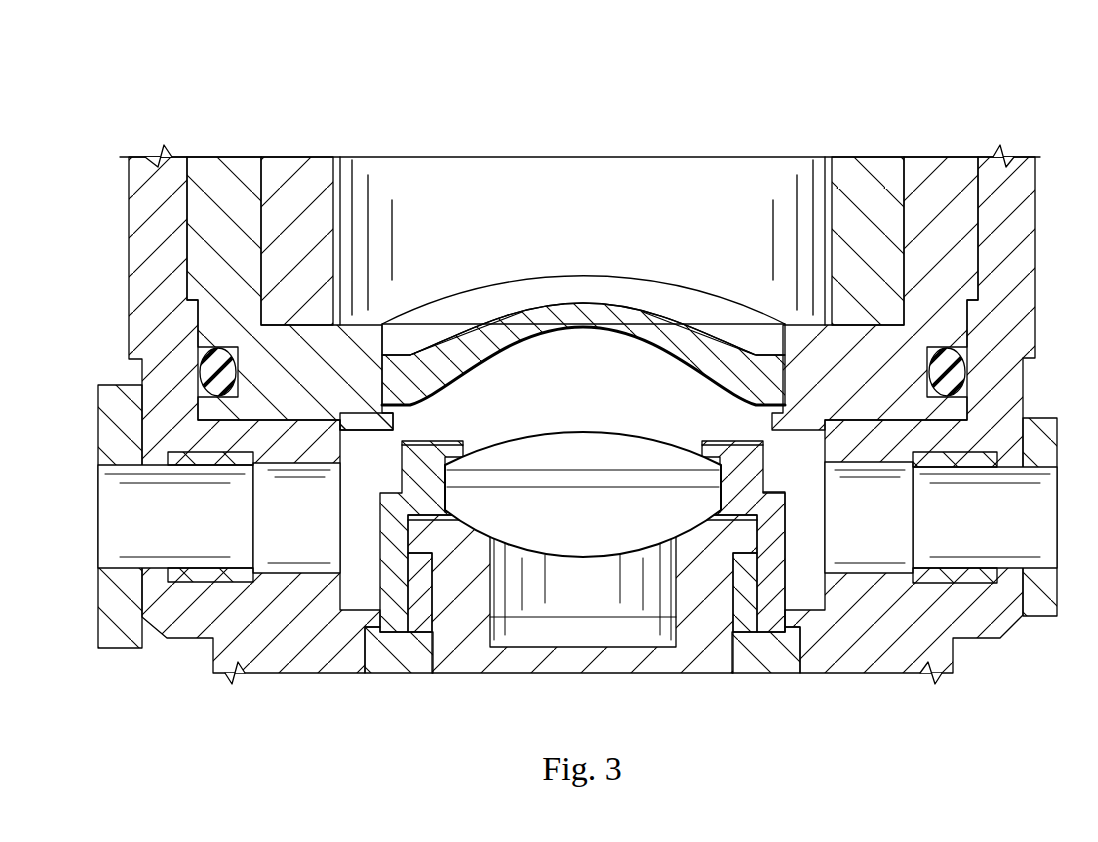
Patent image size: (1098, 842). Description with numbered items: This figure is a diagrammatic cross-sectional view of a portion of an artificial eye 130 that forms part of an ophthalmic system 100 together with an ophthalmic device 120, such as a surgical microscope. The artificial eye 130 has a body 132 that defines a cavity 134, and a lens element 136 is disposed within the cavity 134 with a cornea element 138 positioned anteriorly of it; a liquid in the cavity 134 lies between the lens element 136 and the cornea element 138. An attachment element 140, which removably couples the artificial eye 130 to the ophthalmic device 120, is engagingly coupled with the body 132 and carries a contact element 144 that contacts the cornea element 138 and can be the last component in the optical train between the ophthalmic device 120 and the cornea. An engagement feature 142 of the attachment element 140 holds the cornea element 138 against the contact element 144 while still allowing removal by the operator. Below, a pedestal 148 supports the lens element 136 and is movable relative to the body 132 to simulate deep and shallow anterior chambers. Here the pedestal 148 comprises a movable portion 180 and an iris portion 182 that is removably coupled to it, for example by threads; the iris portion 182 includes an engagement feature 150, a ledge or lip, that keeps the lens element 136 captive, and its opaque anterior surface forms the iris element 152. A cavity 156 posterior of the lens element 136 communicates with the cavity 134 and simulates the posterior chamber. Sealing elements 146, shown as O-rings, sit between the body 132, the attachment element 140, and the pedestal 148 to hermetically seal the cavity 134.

The ophthalmic system 100 is at (730, 130).
The ophthalmic device 120 is at (433, 163).
The artificial eye 130 is at (989, 682).
The body 132 is at (136, 329).
The cavity 134 is at (568, 372).
The lens element 136 is at (568, 512).
The cornea element 138 is at (518, 328).
The attachment element 140 is at (225, 165).
The engagement feature 142 is at (394, 432).
The contact element 144 is at (652, 313).
The sealing elements 146 is at (223, 346).
The pedestal 148 is at (385, 666).
The engagement feature 150 is at (700, 448).
The iris element 152 is at (452, 436).
The cavity 156 is at (613, 612).
The movable portion 180 is at (712, 666).
The iris portion 182 is at (775, 492).